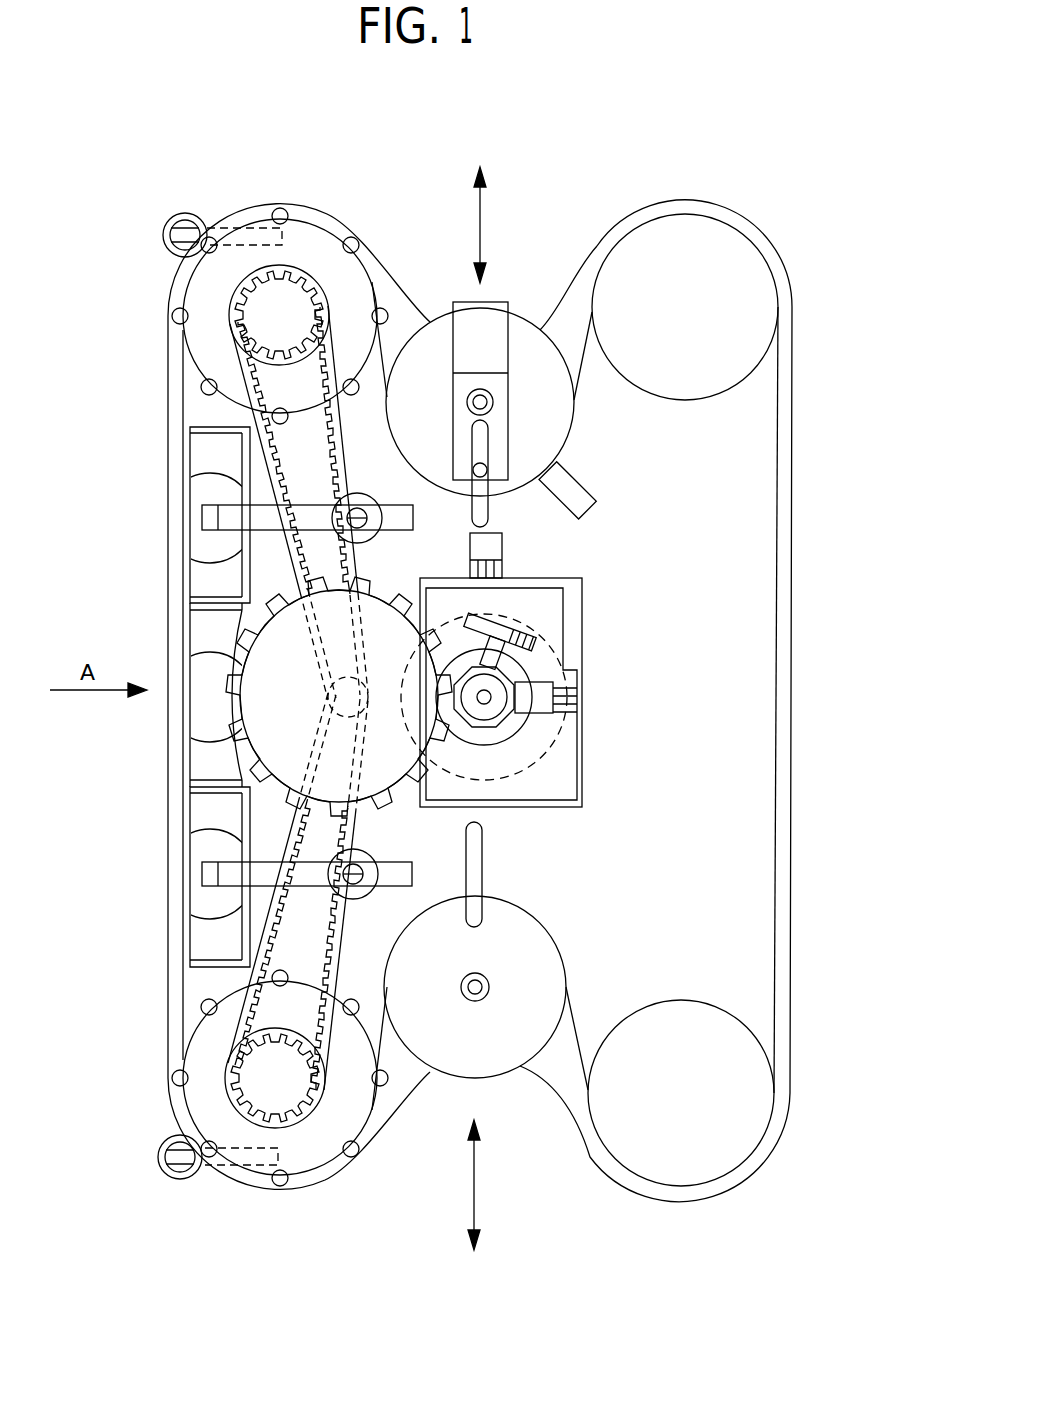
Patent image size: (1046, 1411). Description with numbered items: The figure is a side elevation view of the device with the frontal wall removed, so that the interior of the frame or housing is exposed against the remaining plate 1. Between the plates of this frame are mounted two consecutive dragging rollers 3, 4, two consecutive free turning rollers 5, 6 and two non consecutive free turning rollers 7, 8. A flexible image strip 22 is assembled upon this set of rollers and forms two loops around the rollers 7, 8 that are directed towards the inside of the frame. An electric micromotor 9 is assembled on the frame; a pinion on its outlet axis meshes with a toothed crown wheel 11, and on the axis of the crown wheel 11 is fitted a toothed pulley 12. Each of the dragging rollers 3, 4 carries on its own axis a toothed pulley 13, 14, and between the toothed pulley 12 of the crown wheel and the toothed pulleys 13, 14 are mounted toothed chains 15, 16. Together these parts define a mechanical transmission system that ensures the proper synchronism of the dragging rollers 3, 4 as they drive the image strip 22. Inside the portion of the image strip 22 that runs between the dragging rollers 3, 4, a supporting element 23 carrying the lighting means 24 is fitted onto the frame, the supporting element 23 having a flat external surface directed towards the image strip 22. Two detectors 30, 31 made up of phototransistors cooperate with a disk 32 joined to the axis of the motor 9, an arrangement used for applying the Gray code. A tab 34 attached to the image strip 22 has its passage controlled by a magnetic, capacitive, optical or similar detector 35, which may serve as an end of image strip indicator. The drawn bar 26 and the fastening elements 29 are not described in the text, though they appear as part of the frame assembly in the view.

The plate 1 is at (791, 493).
The flexible image strip 22 is at (777, 597).
The dragging roller 3 is at (195, 318).
The dragging roller 4 is at (340, 1107).
The free turning roller 5 is at (722, 250).
The free turning roller 6 is at (735, 1085).
The free turning roller 7 is at (522, 338).
The free turning roller 8 is at (480, 1045).
The electric micromotor 9 is at (498, 780).
The toothed crown wheel 11 is at (282, 747).
The toothed pulley 12 is at (363, 683).
The toothed pulley 13 is at (310, 278).
The toothed pulley 14 is at (232, 1078).
The toothed chain 15 is at (200, 397).
The toothed chain 16 is at (255, 990).
The supporting element 23 is at (183, 512).
The lighting means 24 is at (200, 712).
The lower guide bar 26 is at (205, 880).
The mounting bolt 29 is at (162, 228).
The detector 30 is at (505, 660).
The detector 31 is at (527, 700).
The disk 32 is at (503, 737).
The tab 34 is at (577, 487).
The detector 35 is at (500, 575).